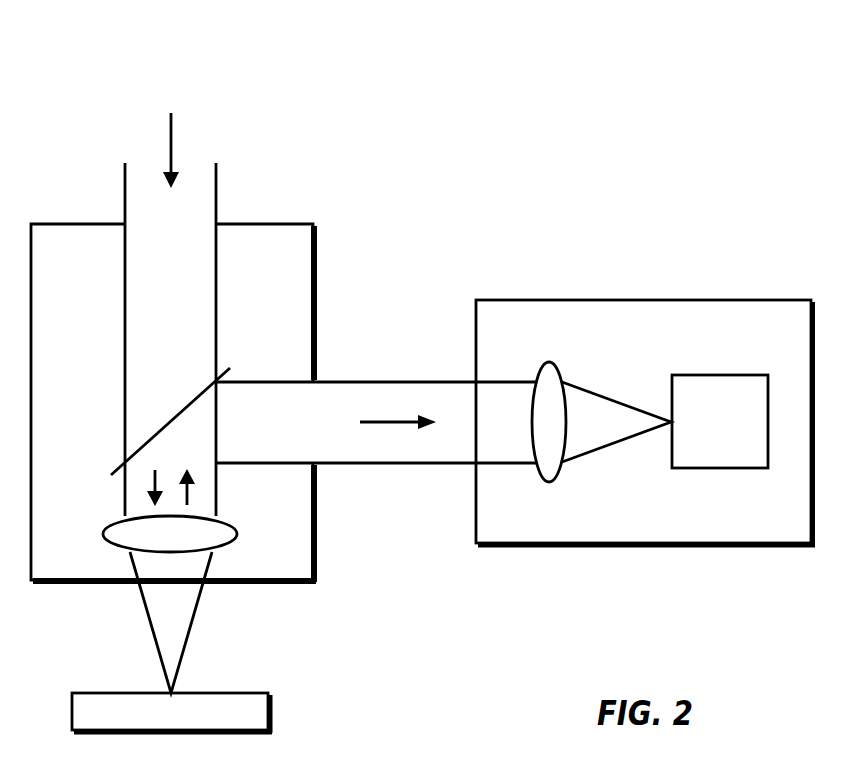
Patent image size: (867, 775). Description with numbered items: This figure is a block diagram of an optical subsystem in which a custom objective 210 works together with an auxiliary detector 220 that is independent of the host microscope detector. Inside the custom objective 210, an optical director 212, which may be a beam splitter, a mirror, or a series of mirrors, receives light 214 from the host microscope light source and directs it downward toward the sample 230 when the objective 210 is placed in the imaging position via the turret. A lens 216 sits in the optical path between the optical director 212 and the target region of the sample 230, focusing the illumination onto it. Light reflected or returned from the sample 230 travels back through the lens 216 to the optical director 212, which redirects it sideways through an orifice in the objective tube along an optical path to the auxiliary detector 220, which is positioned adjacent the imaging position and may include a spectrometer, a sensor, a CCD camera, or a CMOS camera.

The custom objective 210 is at (257, 223).
The optical director 212 is at (222, 365).
The light 214 is at (194, 93).
The lens 216 is at (227, 522).
The auxiliary detector 220 is at (687, 299).
The sample 230 is at (223, 692).